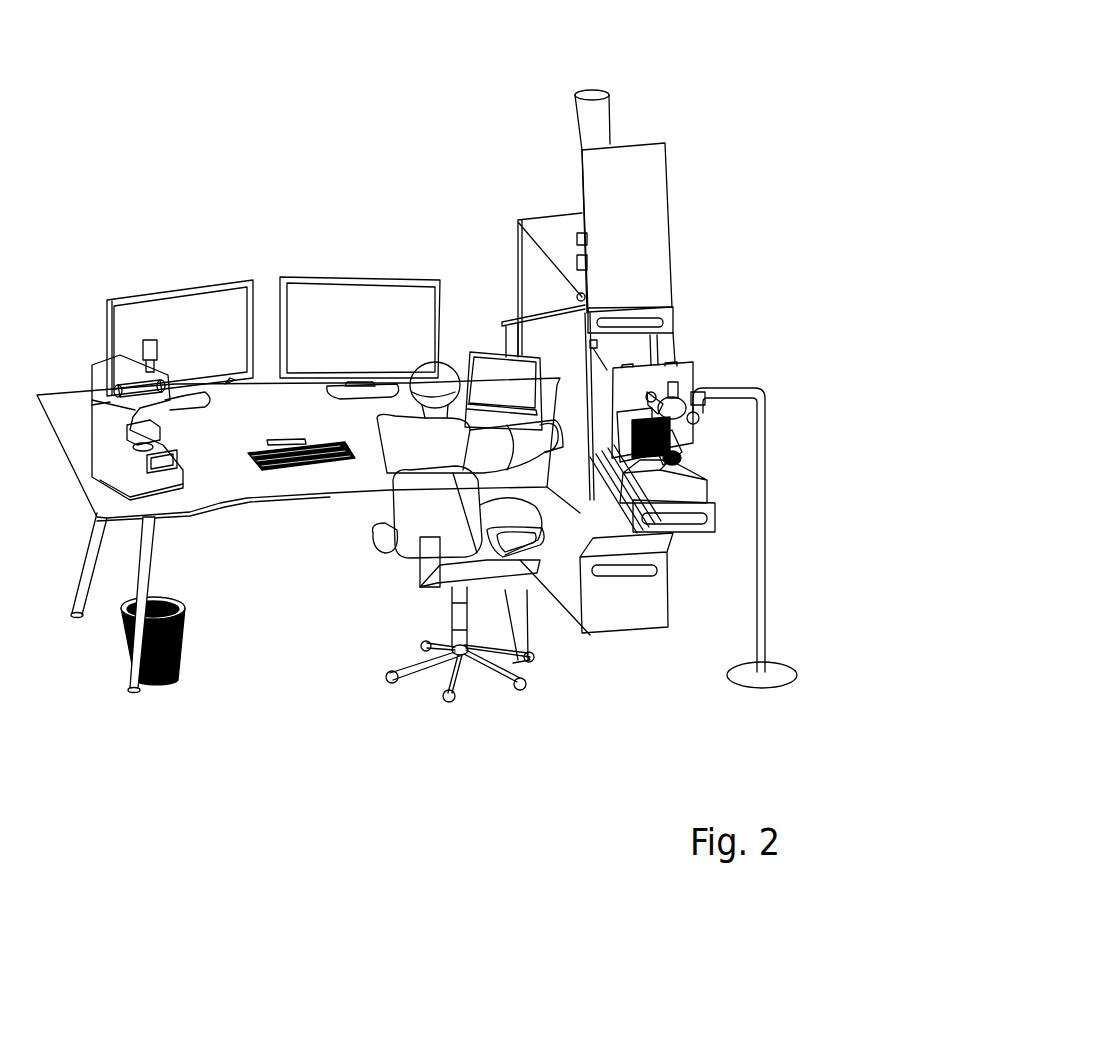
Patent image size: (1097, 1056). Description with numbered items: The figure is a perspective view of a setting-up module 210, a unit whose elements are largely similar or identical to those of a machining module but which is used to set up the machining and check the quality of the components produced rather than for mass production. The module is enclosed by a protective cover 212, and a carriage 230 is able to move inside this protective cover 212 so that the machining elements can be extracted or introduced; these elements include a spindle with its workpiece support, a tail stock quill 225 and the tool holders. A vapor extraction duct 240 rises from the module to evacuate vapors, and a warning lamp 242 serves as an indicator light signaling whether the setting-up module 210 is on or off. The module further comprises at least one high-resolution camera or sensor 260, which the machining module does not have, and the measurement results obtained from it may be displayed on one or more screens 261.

The setting-up module 210 is at (289, 808).
The screens 261 is at (317, 308).
The protective cover 212 is at (532, 297).
The vapor extraction duct 240 is at (585, 130).
The warning lamp 242 is at (580, 253).
The sensor or camera 260 is at (683, 402).
The tailstock quill 225 is at (676, 453).
The movable carriage 230 is at (677, 528).